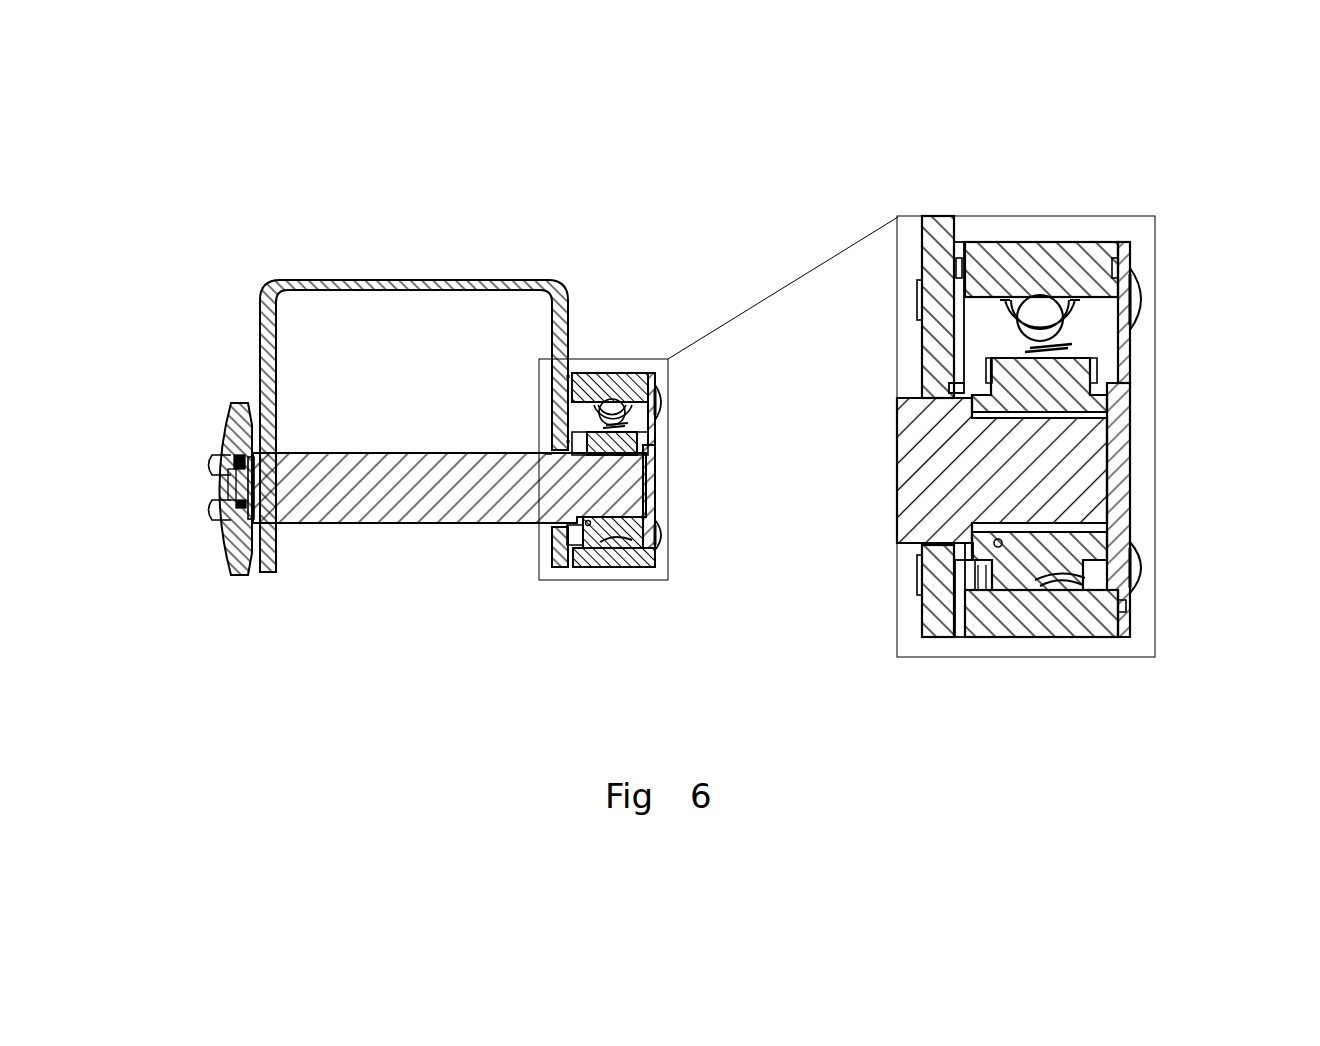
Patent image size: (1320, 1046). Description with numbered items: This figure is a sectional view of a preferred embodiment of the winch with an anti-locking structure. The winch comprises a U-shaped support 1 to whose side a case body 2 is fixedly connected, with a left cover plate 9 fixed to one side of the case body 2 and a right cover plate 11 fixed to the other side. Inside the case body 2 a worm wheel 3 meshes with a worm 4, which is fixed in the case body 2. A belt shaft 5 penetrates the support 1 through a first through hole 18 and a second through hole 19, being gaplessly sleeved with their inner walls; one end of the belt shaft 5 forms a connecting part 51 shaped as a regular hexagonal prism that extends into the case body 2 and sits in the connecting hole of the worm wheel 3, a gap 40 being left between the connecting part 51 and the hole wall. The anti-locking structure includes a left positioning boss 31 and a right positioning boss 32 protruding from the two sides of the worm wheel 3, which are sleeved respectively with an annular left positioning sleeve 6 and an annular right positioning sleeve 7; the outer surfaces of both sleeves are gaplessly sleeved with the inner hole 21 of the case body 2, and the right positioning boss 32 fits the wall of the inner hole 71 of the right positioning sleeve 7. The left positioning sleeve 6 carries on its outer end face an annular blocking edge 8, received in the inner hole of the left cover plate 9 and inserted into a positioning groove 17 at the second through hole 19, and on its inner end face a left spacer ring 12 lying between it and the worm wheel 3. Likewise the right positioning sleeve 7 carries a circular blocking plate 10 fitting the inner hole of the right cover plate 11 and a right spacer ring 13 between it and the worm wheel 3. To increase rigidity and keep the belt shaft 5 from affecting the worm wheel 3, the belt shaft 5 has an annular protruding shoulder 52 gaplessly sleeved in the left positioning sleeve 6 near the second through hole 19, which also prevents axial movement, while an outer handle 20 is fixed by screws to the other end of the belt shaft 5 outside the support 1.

The support 1 is at (478, 283).
The case body 2 is at (1010, 240).
The worm wheel 3 is at (1088, 355).
The worm 4 is at (1045, 320).
The belt shaft 5 is at (387, 505).
The left positioning sleeve 6 is at (981, 575).
The right positioning sleeve 7 is at (1132, 590).
The annular blocking edge 8 is at (955, 570).
The left cover plate 9 is at (962, 240).
The circular blocking plate 10 is at (1124, 503).
The right cover plate 11 is at (1123, 240).
The left spacer ring 12 is at (990, 578).
The right spacer ring 13 is at (1083, 567).
The positioning groove 17 is at (954, 390).
The first through hole 18 is at (262, 453).
The second through hole 19 is at (555, 455).
The outer handle 20 is at (232, 418).
The inner hole of the case body 21 is at (988, 578).
The left positioning boss 31 is at (975, 533).
The right positioning boss 32 is at (1120, 538).
The gap 40 is at (1105, 406).
The connecting part 51 is at (1067, 468).
The protruding shoulder 52 is at (965, 550).
The inner hole of the right positioning sleeve 71 is at (1113, 568).